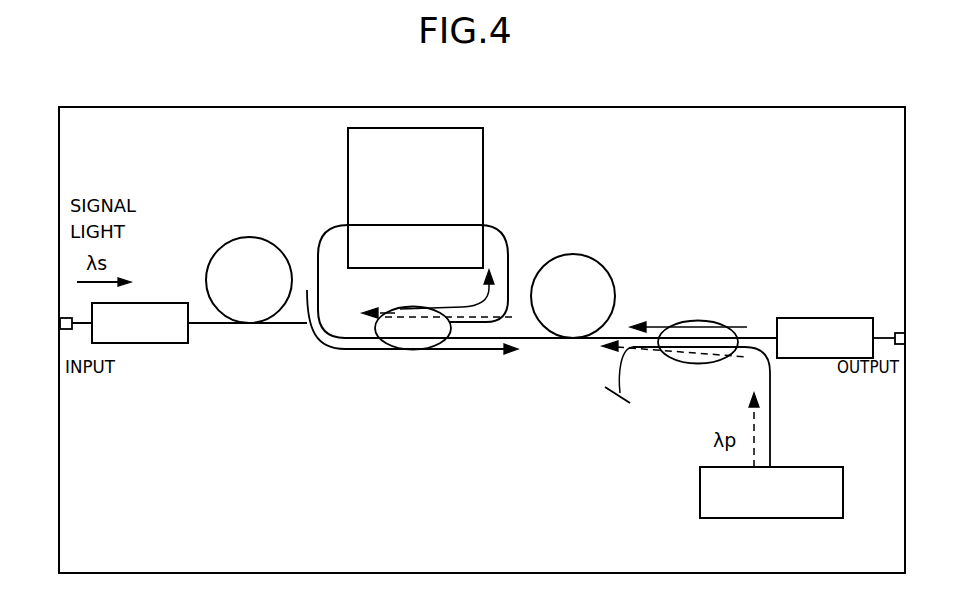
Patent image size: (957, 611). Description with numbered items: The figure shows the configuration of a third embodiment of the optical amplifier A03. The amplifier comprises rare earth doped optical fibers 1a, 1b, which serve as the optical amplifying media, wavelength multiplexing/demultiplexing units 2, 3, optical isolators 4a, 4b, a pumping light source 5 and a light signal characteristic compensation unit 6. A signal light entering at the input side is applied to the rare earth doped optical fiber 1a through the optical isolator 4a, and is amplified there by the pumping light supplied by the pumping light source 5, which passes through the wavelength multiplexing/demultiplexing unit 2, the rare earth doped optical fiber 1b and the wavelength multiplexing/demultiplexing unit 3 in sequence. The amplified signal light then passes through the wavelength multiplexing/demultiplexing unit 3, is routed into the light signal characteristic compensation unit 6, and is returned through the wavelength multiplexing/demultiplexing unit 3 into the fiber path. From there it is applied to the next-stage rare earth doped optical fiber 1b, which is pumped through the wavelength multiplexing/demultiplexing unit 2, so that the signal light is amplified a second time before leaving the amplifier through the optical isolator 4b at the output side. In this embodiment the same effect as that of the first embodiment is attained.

The optical amplifier A03 is at (658, 107).
The rare earth doped optical fiber 1a is at (250, 237).
The rare earth doped optical fiber 1b is at (573, 254).
The wavelength multiplexing/demultiplexing unit 2 is at (695, 318).
The wavelength multiplexing/demultiplexing unit 3 is at (411, 350).
The optical isolator 4a is at (146, 303).
The optical isolator 4b is at (804, 318).
The pumping light source 5 is at (700, 488).
The light signal characteristic compensation unit 6 is at (483, 160).